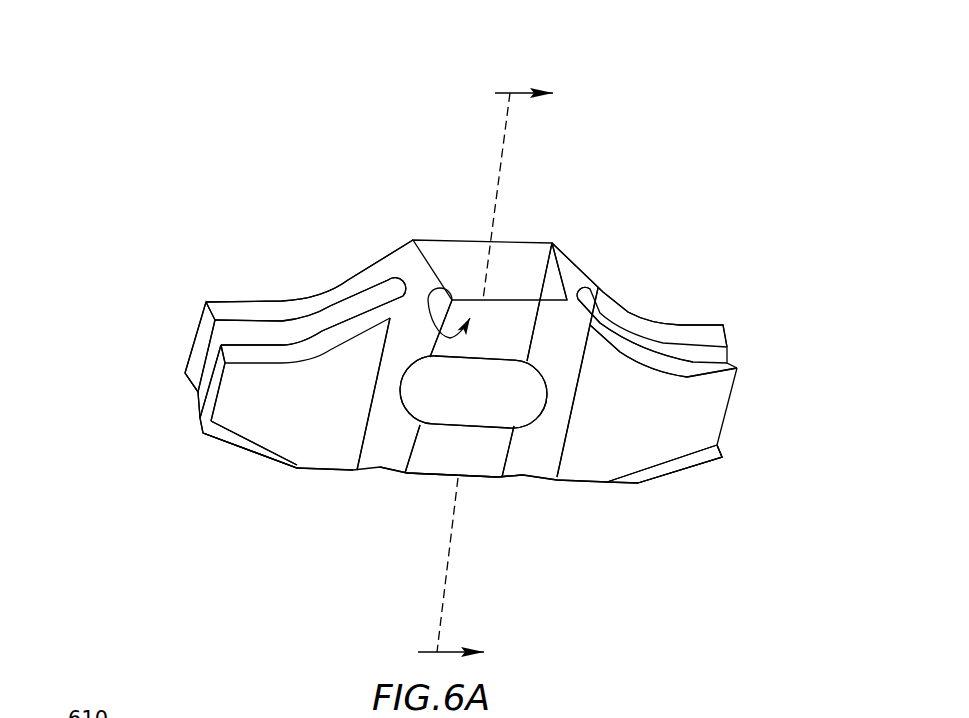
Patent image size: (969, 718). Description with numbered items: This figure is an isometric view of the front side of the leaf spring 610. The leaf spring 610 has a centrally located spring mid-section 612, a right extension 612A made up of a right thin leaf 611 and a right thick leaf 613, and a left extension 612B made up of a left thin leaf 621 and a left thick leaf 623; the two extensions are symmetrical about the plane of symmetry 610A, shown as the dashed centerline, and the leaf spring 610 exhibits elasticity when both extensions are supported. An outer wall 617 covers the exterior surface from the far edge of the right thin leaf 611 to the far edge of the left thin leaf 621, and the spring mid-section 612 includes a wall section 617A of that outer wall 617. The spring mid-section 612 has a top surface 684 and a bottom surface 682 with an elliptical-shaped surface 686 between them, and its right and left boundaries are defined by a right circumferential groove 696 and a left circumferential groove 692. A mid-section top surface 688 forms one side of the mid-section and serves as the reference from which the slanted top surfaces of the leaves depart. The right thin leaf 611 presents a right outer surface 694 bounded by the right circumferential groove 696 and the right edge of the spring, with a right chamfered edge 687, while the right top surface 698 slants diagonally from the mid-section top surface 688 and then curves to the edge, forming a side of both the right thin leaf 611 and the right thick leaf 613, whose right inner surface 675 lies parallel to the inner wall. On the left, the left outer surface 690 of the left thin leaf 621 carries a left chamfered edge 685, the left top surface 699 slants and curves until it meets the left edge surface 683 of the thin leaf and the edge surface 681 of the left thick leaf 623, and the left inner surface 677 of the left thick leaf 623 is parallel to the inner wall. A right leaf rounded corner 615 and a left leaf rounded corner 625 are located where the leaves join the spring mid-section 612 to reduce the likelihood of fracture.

The leaf spring 610 is at (115, 150).
The plane of symmetry 610A is at (503, 141).
The elliptical-shaped surface 686 is at (466, 374).
The mid-section top surface 688 is at (521, 260).
The top surface 684 is at (437, 337).
The left leaf rounded corner 625 is at (393, 287).
The right leaf rounded corner 615 is at (588, 292).
The left thick leaf 623 is at (213, 290).
The left top surface 699 is at (293, 306).
The right thick leaf 613 is at (707, 315).
The edge surface of the left thick leaf 681 is at (201, 331).
The right inner surface 675 is at (670, 357).
The left edge surface 683 is at (206, 397).
The right top surface 698 is at (688, 372).
The left inner surface 677 is at (270, 333).
The left outer surface 690 is at (313, 413).
The left chamfered edge 685 is at (258, 452).
The left thin leaf 621 is at (233, 457).
The left extension 612B is at (302, 483).
The left circumferential groove 692 is at (384, 410).
The bottom surface 682 is at (449, 452).
The wall section 617A is at (418, 480).
The spring mid-section 612 is at (475, 490).
The outer wall 617 is at (526, 497).
The right circumferential groove 696 is at (530, 437).
The right outer surface 694 is at (608, 405).
The right extension 612A is at (603, 500).
The right thin leaf 611 is at (675, 490).
The right chamfered edge 687 is at (697, 455).